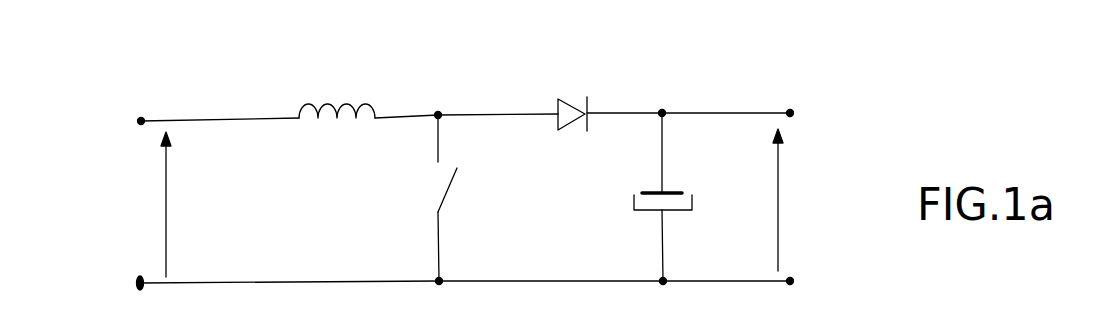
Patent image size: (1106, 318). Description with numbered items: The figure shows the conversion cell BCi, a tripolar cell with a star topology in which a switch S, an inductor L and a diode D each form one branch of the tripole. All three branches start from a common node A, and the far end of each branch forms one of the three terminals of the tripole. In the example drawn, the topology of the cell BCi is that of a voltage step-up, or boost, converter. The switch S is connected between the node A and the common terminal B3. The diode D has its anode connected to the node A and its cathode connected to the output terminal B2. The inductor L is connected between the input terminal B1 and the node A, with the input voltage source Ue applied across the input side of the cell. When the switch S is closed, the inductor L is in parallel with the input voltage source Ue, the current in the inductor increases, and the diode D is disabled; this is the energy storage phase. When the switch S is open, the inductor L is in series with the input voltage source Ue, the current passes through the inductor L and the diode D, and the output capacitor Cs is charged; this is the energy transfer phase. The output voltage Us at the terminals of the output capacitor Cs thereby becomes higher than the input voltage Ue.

The input terminal B1 is at (141, 119).
The output terminal B2 is at (663, 112).
The common terminal B3 is at (438, 280).
The inductor L is at (326, 103).
The common node A is at (439, 115).
The switch S is at (456, 190).
The diode D is at (561, 97).
The output capacitor Cs is at (683, 197).
The input voltage source Ue is at (151, 204).
The output voltage Us is at (793, 200).
The conversion cell BCi is at (766, 90).